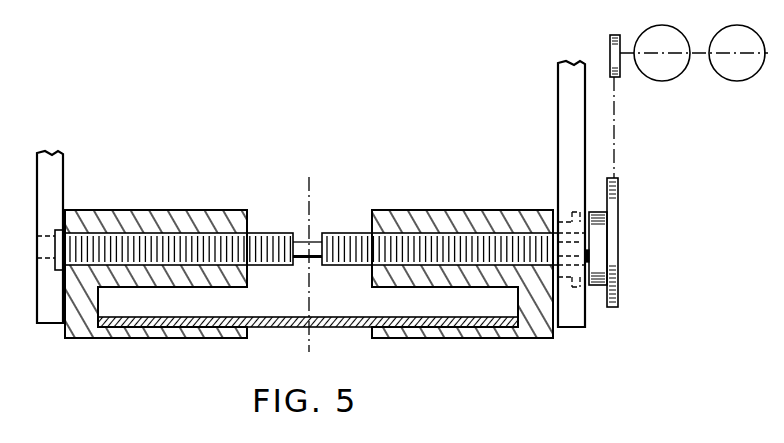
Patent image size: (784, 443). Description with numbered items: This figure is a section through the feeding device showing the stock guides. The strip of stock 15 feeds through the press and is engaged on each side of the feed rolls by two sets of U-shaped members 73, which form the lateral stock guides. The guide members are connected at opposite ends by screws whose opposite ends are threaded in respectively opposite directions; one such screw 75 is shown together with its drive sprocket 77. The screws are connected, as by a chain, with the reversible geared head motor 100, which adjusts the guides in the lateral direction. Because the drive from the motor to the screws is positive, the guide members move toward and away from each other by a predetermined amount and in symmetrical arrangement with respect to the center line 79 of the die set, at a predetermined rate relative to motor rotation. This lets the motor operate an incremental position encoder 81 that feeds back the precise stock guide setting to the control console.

The strip of stock 15 is at (353, 328).
The U-shaped members 73 is at (165, 210).
The screw 75 is at (348, 240).
The drive sprocket 77 is at (612, 268).
The center line 79 is at (307, 205).
The incremental position encoder 81 is at (737, 80).
The reversible geared head motor 100 is at (666, 81).